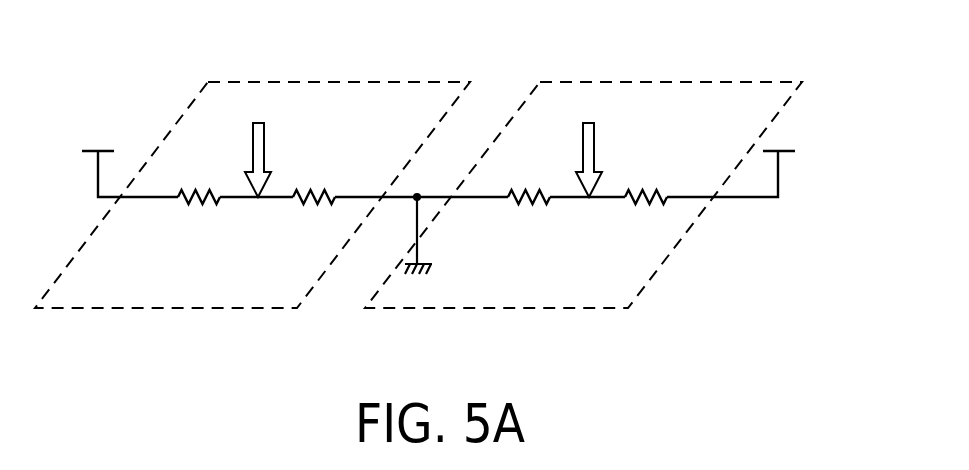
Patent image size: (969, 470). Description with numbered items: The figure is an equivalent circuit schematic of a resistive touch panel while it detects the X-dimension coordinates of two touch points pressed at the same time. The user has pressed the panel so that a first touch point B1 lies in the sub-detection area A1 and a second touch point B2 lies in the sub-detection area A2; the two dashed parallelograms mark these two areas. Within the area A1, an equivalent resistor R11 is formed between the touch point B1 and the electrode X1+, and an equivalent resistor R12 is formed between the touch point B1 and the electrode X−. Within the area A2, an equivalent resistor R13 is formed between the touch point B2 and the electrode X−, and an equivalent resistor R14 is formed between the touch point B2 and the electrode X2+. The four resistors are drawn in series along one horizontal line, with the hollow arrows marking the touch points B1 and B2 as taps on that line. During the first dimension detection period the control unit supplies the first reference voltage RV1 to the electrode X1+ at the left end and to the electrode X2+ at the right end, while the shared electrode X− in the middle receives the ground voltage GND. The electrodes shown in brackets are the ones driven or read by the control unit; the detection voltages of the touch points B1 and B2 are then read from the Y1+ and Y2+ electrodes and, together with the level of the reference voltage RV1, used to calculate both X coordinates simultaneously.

The sub-detection area A1 is at (240, 82).
The sub-detection area A2 is at (570, 82).
The first reference voltage RV1 is at (455, 154).
The equivalent resistor R11 is at (199, 217).
The equivalent resistor R12 is at (314, 217).
The equivalent resistor R13 is at (529, 217).
The equivalent resistor R14 is at (646, 217).
The ground voltage GND is at (460, 245).
The first touch point B1 is at (296, 154).
The second touch point B2 is at (629, 154).